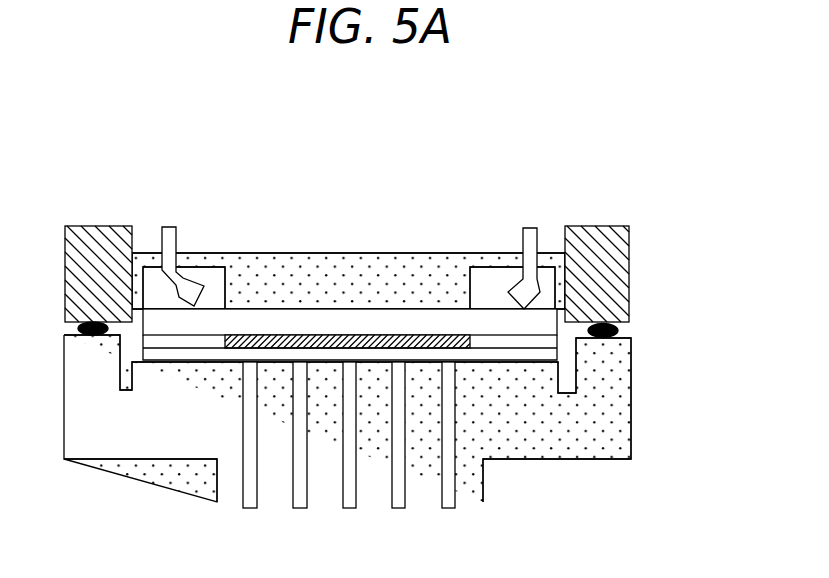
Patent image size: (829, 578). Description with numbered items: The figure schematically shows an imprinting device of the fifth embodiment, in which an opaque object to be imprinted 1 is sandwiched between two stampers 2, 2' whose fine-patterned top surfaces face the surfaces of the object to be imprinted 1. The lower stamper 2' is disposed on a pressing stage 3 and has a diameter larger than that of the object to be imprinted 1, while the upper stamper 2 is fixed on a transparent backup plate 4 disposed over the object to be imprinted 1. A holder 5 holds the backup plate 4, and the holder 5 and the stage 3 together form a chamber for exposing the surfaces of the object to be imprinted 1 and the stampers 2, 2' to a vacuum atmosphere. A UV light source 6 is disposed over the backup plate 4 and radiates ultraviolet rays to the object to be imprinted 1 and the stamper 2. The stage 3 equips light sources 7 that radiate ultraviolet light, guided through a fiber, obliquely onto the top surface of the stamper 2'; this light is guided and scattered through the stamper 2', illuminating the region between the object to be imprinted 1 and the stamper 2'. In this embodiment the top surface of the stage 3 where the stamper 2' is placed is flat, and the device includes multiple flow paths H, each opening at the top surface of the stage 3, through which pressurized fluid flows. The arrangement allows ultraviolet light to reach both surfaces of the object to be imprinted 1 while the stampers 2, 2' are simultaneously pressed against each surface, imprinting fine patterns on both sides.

The object to be imprinted 1 is at (283, 334).
The stamper 2 is at (371, 252).
The stamper 2' is at (418, 346).
The pressing stage 3 is at (482, 418).
The transparent backup plate 4 is at (457, 282).
The holder 5 is at (608, 283).
The UV light source 6 is at (530, 226).
The light sources 7 is at (168, 225).
The flow paths H is at (410, 507).